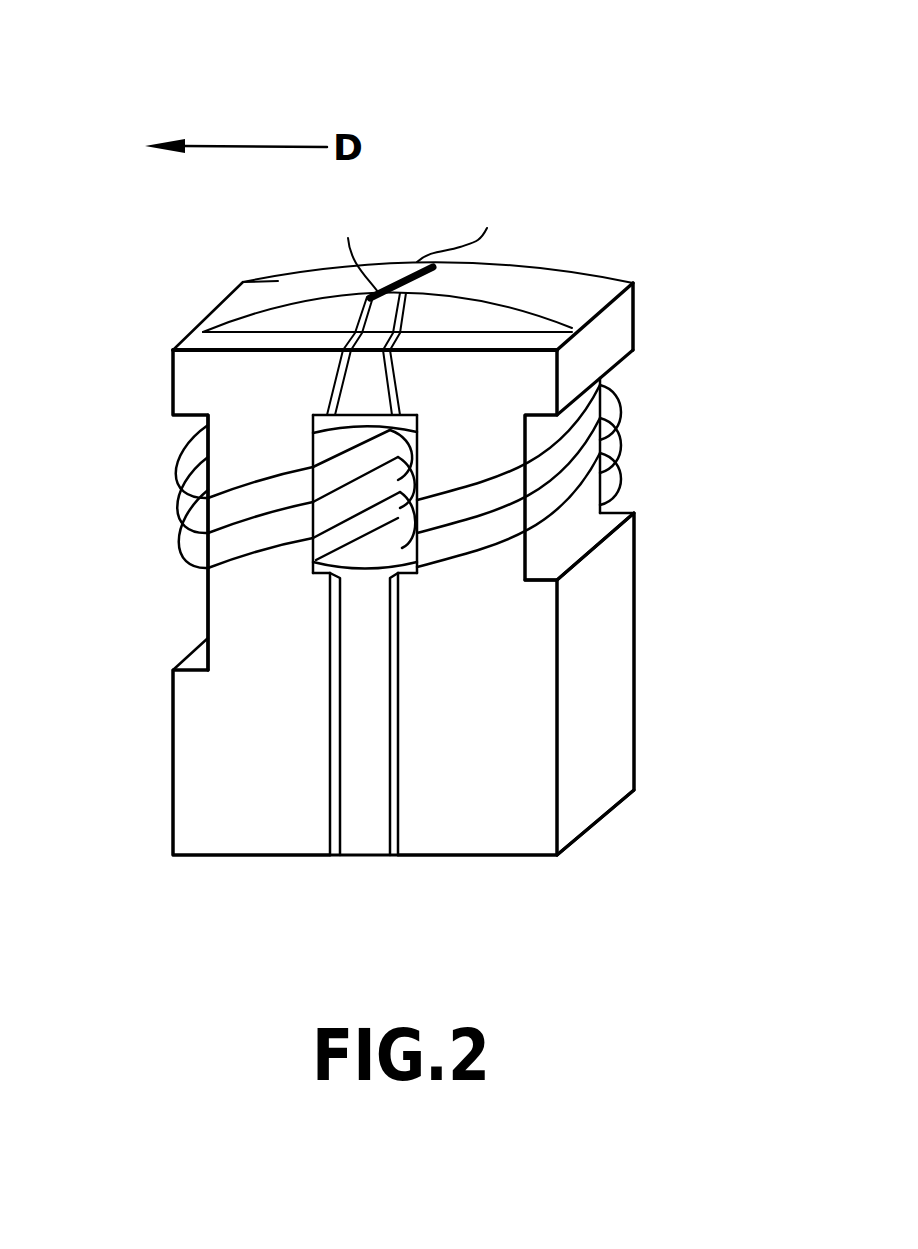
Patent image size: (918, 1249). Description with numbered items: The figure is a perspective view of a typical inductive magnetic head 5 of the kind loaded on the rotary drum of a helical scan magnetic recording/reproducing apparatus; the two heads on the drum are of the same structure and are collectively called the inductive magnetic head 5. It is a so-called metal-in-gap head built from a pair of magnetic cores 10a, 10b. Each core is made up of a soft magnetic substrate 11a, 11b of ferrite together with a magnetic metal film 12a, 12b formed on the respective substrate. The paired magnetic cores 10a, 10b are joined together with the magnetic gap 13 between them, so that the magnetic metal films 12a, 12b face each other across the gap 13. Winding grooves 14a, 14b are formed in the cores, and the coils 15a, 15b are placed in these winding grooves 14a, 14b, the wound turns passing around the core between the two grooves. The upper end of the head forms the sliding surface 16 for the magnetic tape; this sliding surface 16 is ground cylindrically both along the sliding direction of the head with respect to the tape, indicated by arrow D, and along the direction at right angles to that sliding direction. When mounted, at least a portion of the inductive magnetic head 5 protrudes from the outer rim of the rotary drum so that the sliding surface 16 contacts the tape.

The inductive magnetic head 5 is at (667, 153).
The magnetic core 10a is at (670, 296).
The magnetic core 10b is at (203, 302).
The soft magnetic substrate 11a is at (613, 685).
The soft magnetic substrate 11b is at (205, 763).
The magnetic metal film 12a is at (471, 303).
The magnetic metal film 12b is at (350, 303).
The magnetic gap 13 is at (407, 262).
The winding groove 14a is at (563, 528).
The winding groove 14b is at (207, 618).
The coil 15a is at (620, 400).
The coil 15b is at (178, 510).
The sliding surface 16 is at (545, 305).